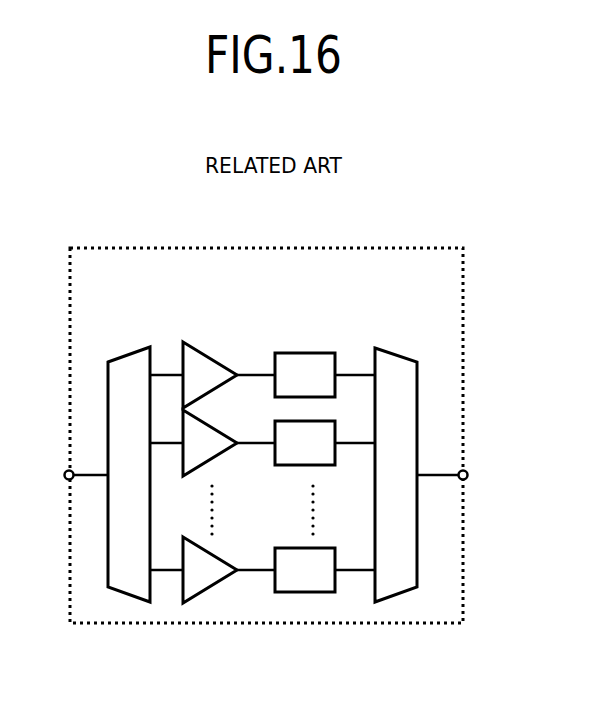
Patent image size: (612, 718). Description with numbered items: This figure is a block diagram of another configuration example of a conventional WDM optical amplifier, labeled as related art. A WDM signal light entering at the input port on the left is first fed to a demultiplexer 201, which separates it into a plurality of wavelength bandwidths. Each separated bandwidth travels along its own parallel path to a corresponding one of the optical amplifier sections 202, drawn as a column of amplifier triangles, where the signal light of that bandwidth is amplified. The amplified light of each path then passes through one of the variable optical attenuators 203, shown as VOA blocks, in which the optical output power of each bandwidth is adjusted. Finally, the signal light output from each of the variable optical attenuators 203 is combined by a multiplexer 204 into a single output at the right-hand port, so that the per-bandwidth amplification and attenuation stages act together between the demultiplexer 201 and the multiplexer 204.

The demultiplexer 201 is at (123, 355).
The optical amplifier sections 202 is at (238, 298).
The variable optical attenuators (VOA) 203 is at (314, 332).
The multiplexer 204 is at (402, 353).